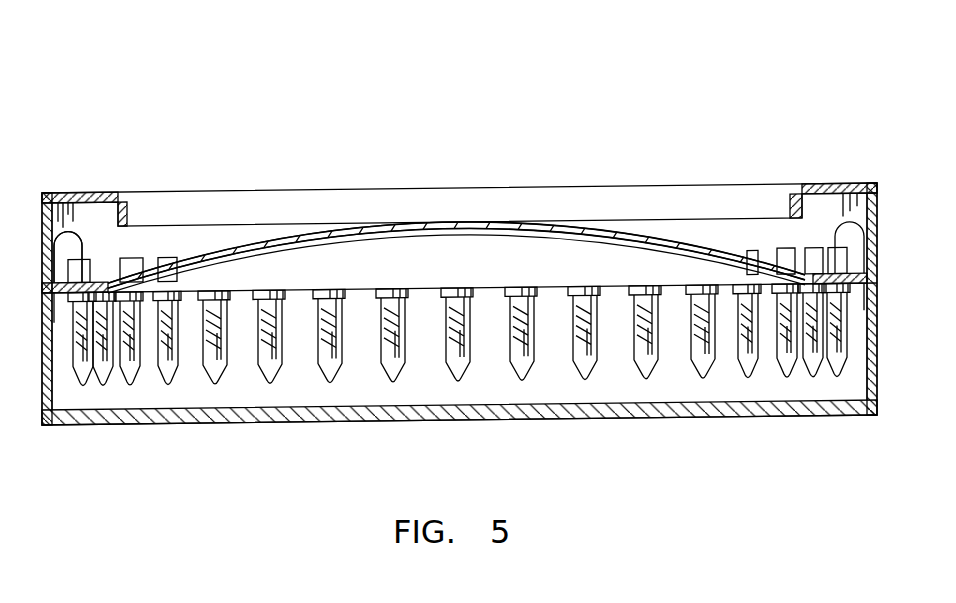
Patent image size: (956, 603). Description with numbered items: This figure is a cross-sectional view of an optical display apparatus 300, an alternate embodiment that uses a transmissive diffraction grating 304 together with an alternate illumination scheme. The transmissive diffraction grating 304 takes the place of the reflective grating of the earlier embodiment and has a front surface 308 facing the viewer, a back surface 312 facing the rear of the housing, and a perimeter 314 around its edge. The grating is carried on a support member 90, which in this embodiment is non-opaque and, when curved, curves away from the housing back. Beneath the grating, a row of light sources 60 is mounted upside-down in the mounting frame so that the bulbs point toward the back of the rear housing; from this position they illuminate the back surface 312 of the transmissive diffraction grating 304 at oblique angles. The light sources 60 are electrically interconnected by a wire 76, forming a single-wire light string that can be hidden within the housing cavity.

The optical display apparatus 300 is at (365, 72).
The transmissive diffraction grating 304 is at (432, 222).
The perimeter 314 is at (100, 287).
The front surface 308 is at (482, 221).
The back surface 312 is at (537, 231).
The support member 90 is at (340, 244).
The wire 76 is at (79, 231).
The light sources 60 is at (167, 360).